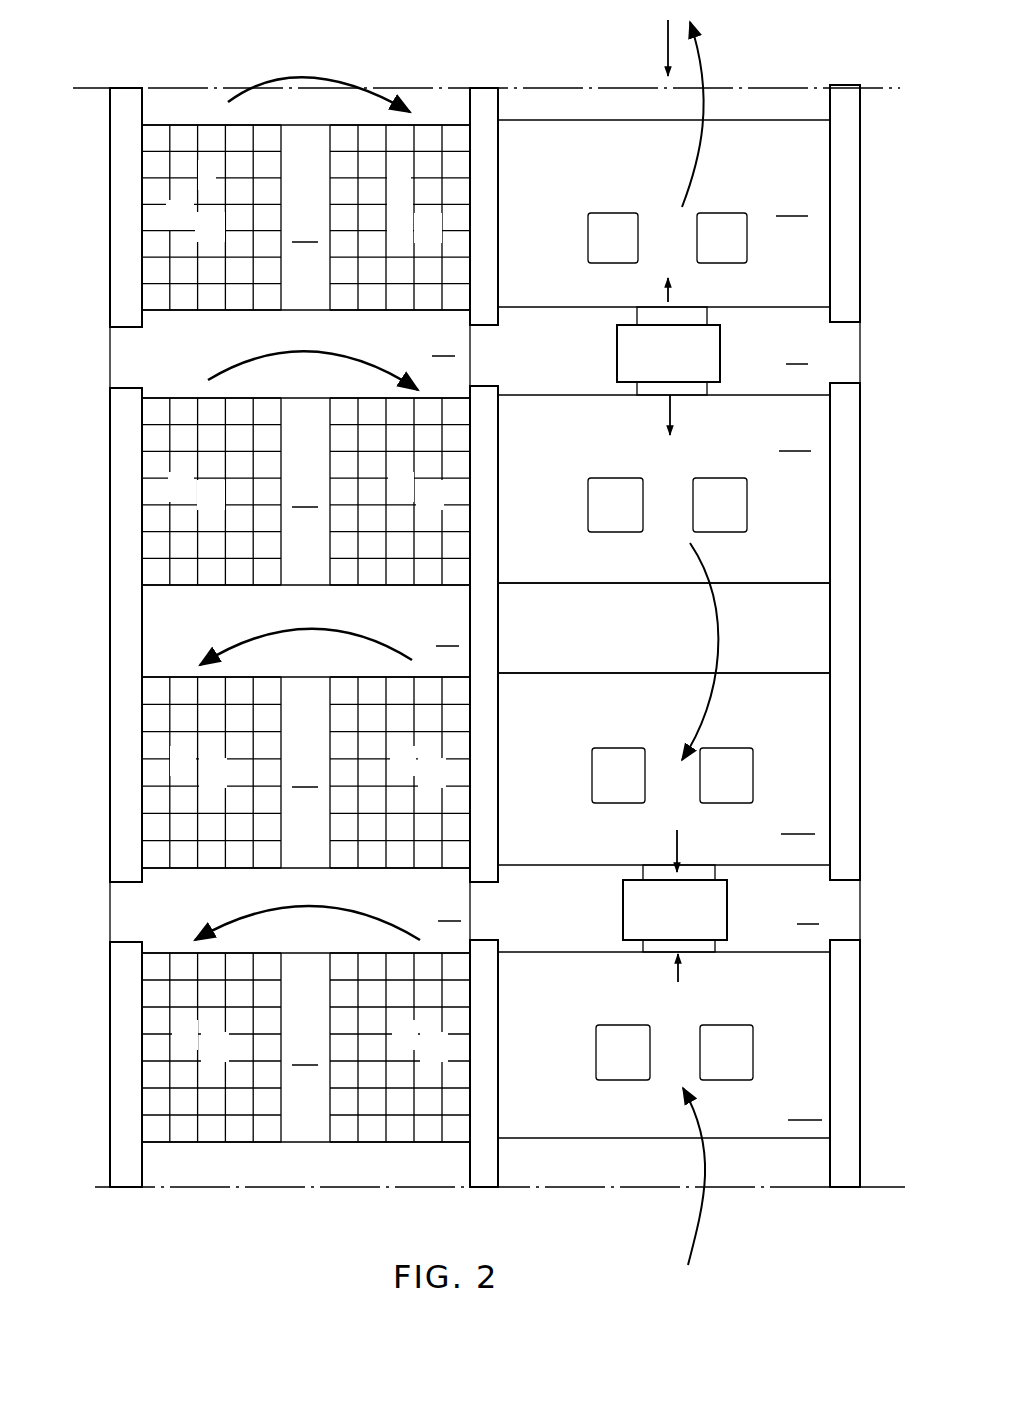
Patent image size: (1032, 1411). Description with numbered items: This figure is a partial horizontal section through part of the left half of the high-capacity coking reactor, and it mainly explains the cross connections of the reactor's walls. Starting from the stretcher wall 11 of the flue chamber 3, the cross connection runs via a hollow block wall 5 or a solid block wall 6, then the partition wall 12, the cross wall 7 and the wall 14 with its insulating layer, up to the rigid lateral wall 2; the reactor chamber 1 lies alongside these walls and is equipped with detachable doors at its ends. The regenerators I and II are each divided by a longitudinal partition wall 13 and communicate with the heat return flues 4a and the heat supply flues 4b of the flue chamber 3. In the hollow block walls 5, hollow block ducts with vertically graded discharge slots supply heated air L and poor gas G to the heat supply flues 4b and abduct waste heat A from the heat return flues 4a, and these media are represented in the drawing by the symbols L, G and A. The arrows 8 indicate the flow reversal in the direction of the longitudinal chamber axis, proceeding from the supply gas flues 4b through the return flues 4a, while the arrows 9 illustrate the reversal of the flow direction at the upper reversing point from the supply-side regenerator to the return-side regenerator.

The reactor chamber 1 is at (896, 726).
The rigid walls 2 is at (92, 534).
The flue chamber 3 is at (646, 76).
The heat return flues 4a is at (707, 934).
The heat supply flues 4b is at (699, 361).
The hollow block wall 5 is at (718, 630).
The solid block wall 6 is at (814, 661).
The cross wall 7 is at (306, 634).
The arrows 8 is at (705, 58).
The arrows 9 is at (248, 90).
The stretcher wall 11 is at (846, 556).
The partition wall 12 is at (490, 556).
The longitudinal partition wall 13 is at (306, 633).
The insulating layer wall 14 is at (130, 647).